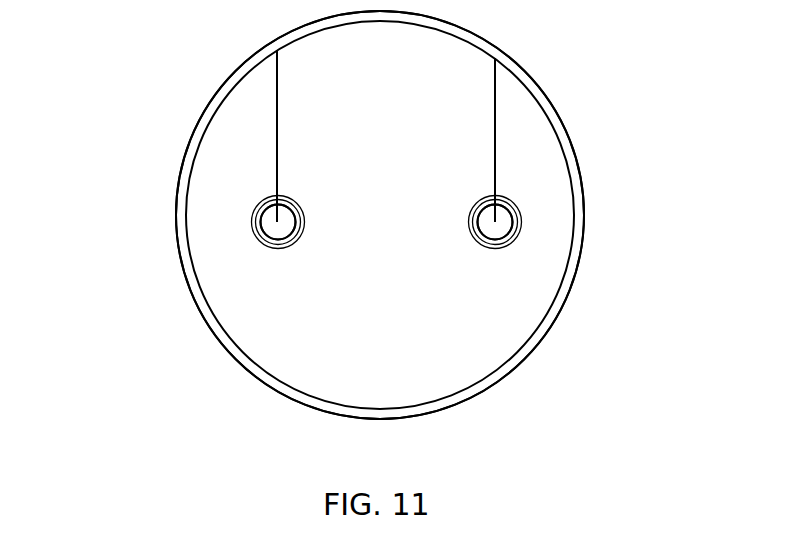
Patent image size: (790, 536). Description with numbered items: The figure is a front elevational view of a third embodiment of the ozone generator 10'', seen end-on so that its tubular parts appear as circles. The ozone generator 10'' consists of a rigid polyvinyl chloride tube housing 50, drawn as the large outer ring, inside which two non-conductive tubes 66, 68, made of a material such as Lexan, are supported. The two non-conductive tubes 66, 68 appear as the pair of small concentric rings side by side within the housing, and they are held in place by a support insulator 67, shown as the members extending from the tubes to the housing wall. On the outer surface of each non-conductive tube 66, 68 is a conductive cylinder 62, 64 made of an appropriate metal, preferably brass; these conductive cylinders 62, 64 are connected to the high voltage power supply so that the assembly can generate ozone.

The ozone generator 10'' is at (325, 215).
The tube housing 50 is at (517, 357).
The conductive cylinder 62 is at (490, 245).
The conductive cylinder 64 is at (262, 222).
The non-conductive tube 66 is at (508, 218).
The support insulator 67 is at (278, 117).
The non-conductive tube 68 is at (283, 235).